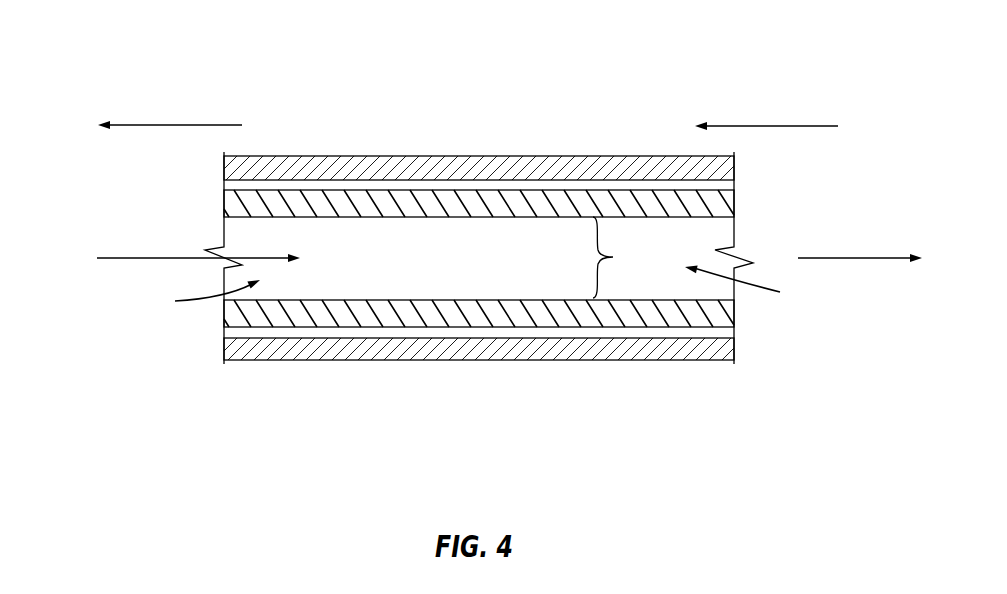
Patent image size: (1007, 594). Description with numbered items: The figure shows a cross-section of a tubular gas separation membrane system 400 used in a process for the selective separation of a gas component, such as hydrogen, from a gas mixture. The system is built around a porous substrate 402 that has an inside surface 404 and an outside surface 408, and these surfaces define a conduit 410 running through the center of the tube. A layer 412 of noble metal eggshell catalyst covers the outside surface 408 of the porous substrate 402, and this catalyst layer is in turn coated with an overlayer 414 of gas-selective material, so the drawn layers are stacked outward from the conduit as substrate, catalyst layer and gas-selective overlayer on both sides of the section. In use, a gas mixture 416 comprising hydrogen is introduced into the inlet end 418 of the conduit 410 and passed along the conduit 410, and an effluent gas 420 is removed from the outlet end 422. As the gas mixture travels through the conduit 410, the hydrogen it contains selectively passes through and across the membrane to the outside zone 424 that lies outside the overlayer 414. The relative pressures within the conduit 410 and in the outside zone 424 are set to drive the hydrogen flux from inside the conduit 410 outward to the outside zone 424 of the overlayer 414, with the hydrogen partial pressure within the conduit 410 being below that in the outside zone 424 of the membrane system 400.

The tubular gas separation membrane system 400 is at (648, 42).
The porous substrate 402 is at (723, 202).
The inside surface 404 is at (627, 257).
The outside surface 408 is at (735, 180).
The conduit 410 is at (513, 274).
The layer of noble metal eggshell catalyst 412 is at (550, 180).
The overlayer of gas-selective material 414 is at (480, 178).
The gas mixture 416 is at (127, 258).
The inlet end 418 is at (193, 298).
The effluent gas 420 is at (880, 257).
The outlet end 422 is at (753, 285).
The outside zone 424 is at (364, 141).